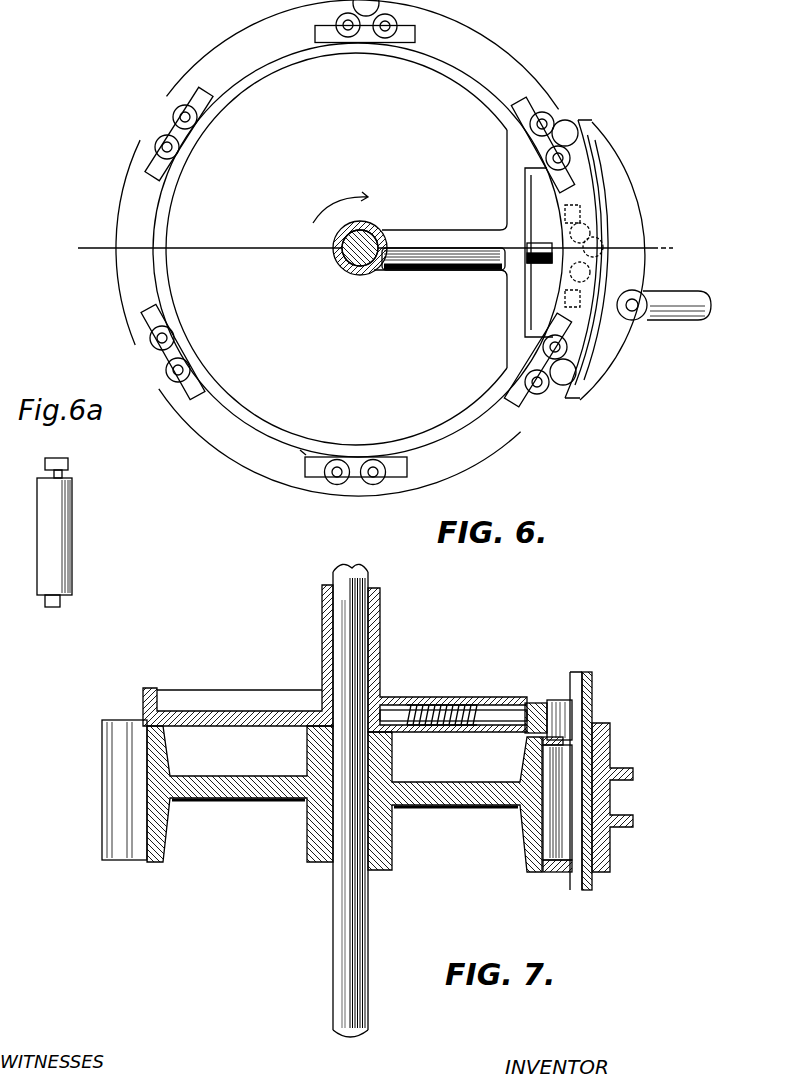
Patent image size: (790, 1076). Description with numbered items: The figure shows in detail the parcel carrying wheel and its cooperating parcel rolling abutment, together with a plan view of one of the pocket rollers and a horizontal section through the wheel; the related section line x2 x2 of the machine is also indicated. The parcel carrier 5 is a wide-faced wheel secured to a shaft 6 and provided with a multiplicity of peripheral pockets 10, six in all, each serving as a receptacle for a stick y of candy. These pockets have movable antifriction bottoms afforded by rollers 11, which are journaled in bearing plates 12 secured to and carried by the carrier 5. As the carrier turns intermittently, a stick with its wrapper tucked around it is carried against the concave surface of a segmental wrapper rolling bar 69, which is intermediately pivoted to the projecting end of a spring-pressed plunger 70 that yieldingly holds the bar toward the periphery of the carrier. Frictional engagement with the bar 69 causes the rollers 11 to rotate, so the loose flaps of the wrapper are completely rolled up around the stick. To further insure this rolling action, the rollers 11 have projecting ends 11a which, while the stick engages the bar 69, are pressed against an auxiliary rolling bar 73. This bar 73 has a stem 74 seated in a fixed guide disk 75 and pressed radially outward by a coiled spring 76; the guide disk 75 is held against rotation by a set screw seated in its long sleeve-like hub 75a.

In FIG. 6, the section line x2 x2 is at (372, 245).
In FIG. 6, the fixed guide disk 75 is at (473, 415).
In FIG. 7, the fixed guide disk 75 is at (188, 712).
In FIG. 6, the sleeve-like hub 75a is at (358, 272).
In FIG. 7, the sleeve-like hub 75a is at (378, 648).
In FIG. 6, the peripheral pockets 10 is at (362, 485).
In FIG. 6A, the rollers 11 is at (80, 533).
In FIG. 7, the rollers 11 is at (560, 778).
In FIG. 6, the projecting ends 11a is at (530, 150).
In FIG. 6A, the projecting ends 11a is at (66, 462).
In FIG. 6, the bearing plates 12 is at (305, 453).
In FIG. 6, the stick y is at (370, 10).
In FIG. 7, the stick y is at (592, 698).
In FIG. 6, the parcel carrying wheel 5 is at (473, 452).
In FIG. 7, the parcel carrying wheel 5 is at (298, 853).
In FIG. 6, the shaft 6 is at (338, 262).
In FIG. 7, the shaft 6 is at (372, 578).
In FIG. 6, the stem 74 is at (512, 270).
In FIG. 7, the stem 74 is at (495, 699).
In FIG. 6, the auxiliary rolling bar 73 is at (555, 290).
In FIG. 7, the auxiliary rolling bar 73 is at (548, 703).
In FIG. 7, the coiled spring 76 is at (447, 699).
In FIG. 6, the segmental wrapper rolling abutment bar 69 is at (613, 345).
In FIG. 7, the segmental wrapper rolling abutment bar 69 is at (622, 795).
In FIG. 6, the plunger 70 is at (690, 304).